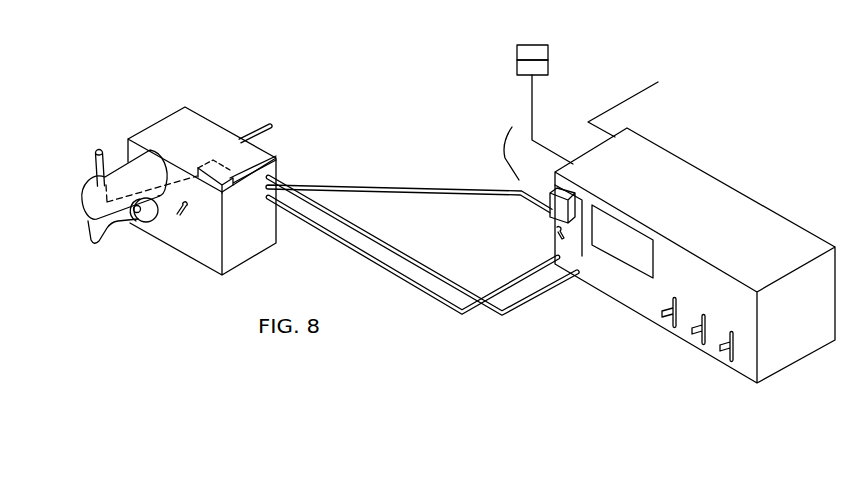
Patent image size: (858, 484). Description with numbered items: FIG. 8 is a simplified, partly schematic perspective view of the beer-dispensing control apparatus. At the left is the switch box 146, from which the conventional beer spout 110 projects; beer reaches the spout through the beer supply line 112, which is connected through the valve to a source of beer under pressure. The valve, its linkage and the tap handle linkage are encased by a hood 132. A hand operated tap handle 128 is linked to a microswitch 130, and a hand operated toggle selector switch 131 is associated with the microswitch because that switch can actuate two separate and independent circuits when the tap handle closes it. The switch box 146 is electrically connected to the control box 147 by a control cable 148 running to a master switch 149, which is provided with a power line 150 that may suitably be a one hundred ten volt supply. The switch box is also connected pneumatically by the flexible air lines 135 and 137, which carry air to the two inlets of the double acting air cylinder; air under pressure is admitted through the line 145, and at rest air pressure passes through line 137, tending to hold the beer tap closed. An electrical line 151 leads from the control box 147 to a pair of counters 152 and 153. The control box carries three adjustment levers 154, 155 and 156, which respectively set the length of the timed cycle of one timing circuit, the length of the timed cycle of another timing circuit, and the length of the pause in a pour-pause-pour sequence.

The beer spout 110 is at (93, 234).
The beer supply line 112 is at (279, 107).
The tap handle 128 is at (102, 150).
The microswitch 130 is at (277, 157).
The toggle selector switch 131 is at (178, 217).
The hood 132 is at (84, 208).
The flexible line 135 is at (408, 258).
The flexible line 137 is at (410, 282).
The line 145 is at (658, 82).
The switch box 146 is at (197, 129).
The control box 147 is at (773, 211).
The control cable 148 is at (431, 189).
The master switch 149 is at (570, 196).
The power line 150 is at (507, 143).
The electrical line 151 is at (533, 110).
The counter 152 is at (548, 47).
The counter 153 is at (546, 63).
The adjustment lever 154 is at (670, 326).
The adjustment lever 155 is at (699, 344).
The adjustment lever 156 is at (726, 361).